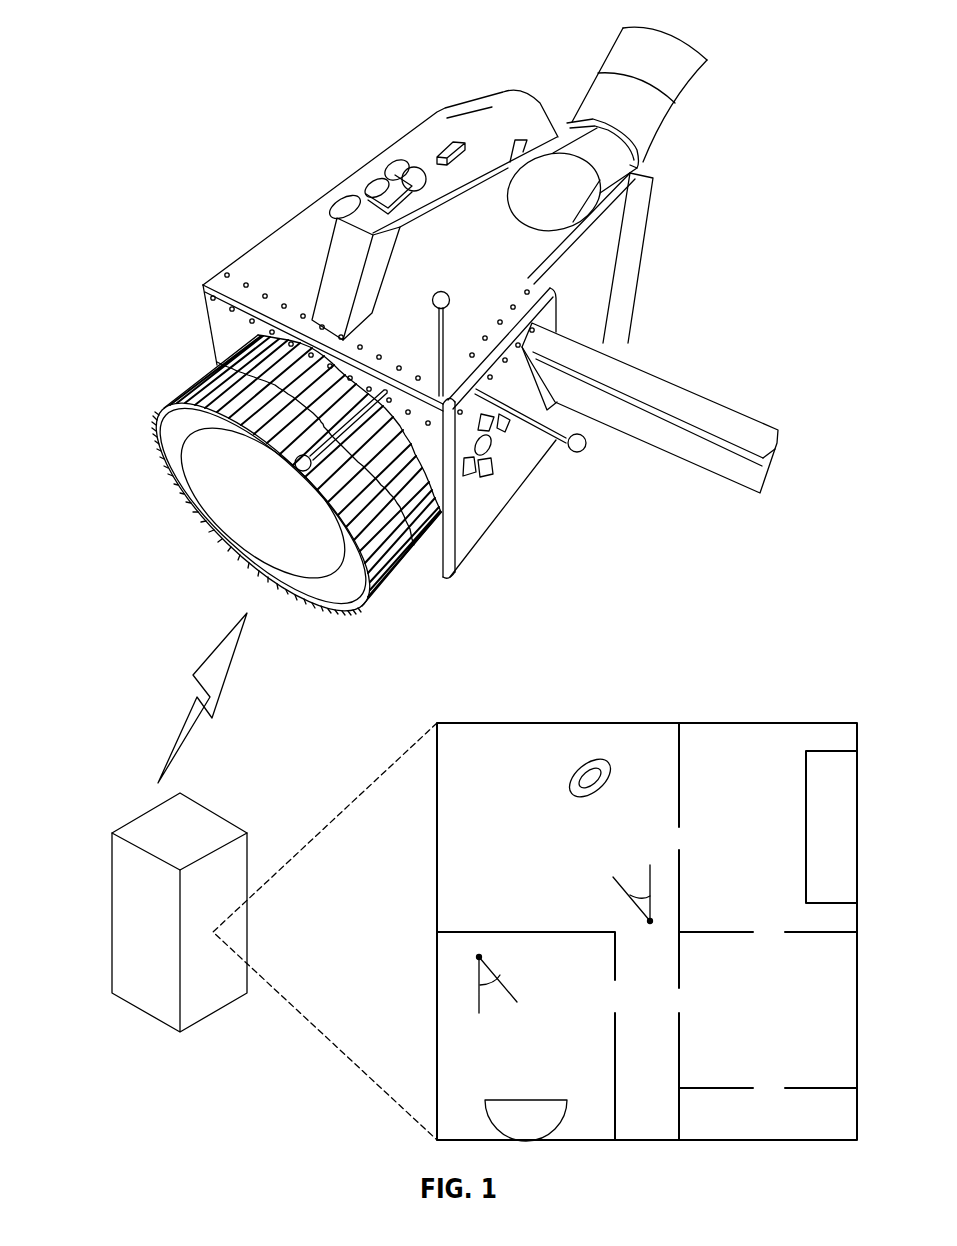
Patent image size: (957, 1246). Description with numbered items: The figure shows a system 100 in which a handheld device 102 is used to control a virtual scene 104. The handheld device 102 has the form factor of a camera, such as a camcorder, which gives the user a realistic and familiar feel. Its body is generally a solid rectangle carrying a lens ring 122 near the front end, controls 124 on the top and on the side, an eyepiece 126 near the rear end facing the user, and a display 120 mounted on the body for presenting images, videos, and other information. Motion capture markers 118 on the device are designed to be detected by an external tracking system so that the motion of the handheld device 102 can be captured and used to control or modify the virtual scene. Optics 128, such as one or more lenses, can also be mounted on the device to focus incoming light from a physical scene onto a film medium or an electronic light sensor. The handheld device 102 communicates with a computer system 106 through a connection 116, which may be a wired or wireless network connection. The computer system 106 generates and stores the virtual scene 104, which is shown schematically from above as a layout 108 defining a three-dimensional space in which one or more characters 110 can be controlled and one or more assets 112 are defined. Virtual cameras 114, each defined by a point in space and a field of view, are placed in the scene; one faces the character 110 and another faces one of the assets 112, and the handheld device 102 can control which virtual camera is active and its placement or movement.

The system 100 is at (150, 53).
The handheld device 102 is at (271, 236).
The virtual scene 104 is at (793, 722).
The computer system 106 is at (213, 1017).
The layout 108 is at (462, 932).
The character 110 is at (606, 756).
The asset 112 is at (850, 839).
The virtual camera 114 is at (628, 899).
The connection 116 is at (182, 712).
The motion capture marker 118 is at (437, 345).
The display 120 is at (732, 405).
The lens ring 122 is at (383, 577).
The controls 124 is at (397, 165).
The eyepiece 126 is at (680, 90).
The optics 128 is at (263, 523).